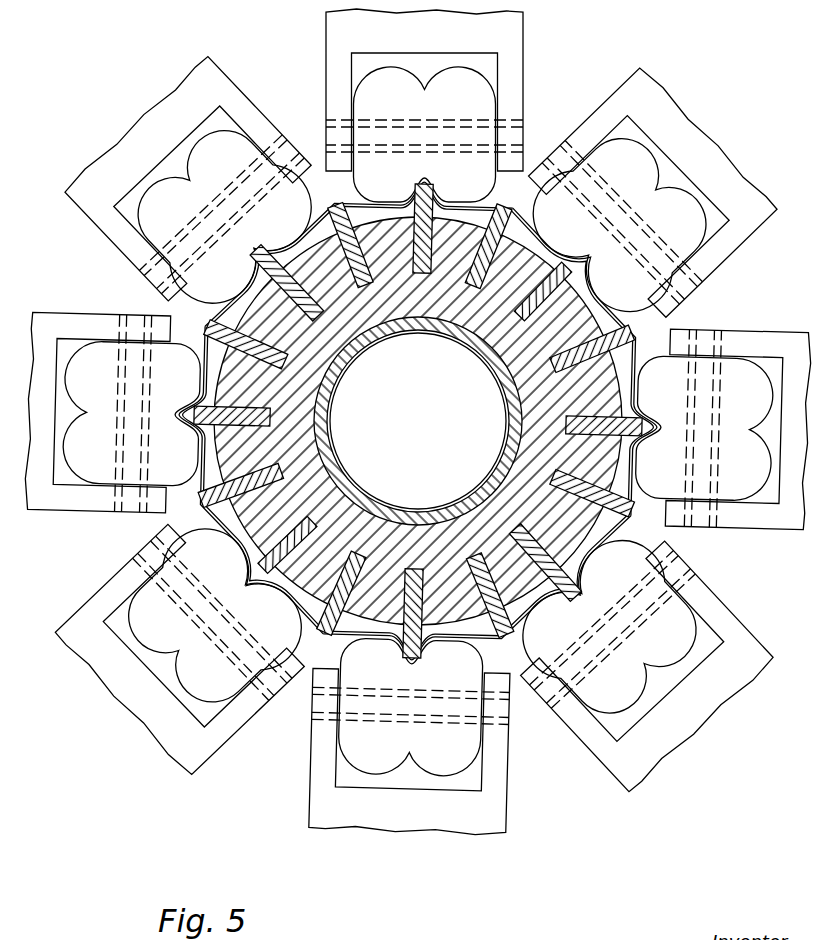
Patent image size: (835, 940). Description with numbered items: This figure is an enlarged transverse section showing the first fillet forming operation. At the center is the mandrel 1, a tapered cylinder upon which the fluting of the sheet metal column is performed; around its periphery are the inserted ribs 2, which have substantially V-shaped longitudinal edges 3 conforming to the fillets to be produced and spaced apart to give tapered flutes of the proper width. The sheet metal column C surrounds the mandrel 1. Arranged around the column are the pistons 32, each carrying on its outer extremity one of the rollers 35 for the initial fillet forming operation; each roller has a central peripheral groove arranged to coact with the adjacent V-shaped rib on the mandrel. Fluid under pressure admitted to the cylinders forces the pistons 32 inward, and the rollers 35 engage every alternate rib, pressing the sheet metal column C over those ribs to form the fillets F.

The mandrel 1 is at (304, 403).
The ribs 2 is at (282, 471).
The V-shaped longitudinal edges 3 is at (207, 493).
The piston 32 is at (428, 822).
The rollers 35 is at (367, 755).
The sheet metal column C is at (433, 420).
The fillets F is at (410, 643).